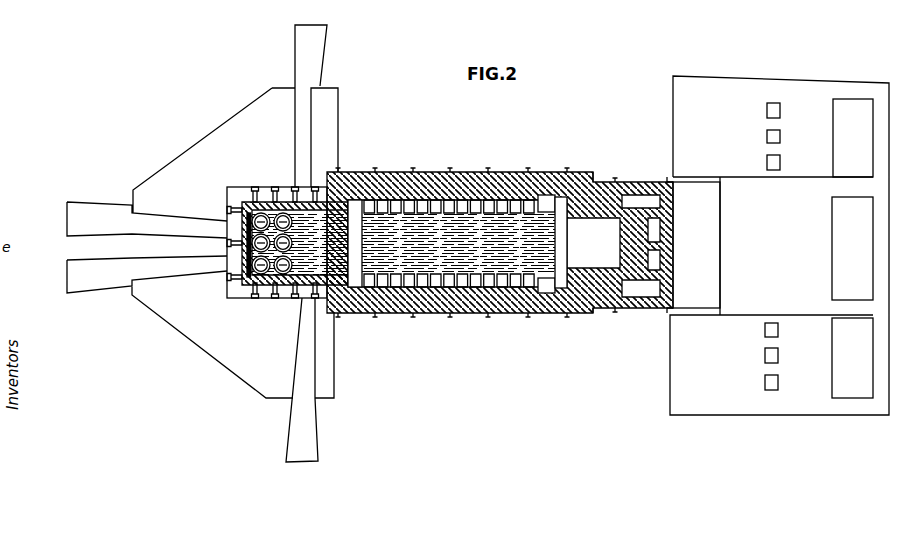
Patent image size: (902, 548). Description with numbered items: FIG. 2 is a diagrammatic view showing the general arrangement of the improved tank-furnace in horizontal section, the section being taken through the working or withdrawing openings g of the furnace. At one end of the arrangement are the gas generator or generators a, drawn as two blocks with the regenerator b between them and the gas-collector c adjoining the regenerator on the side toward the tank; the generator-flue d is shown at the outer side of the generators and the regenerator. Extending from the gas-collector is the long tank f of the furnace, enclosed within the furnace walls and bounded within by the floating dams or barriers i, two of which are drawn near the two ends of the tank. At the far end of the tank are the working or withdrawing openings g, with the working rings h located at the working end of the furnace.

The gas generator a is at (779, 245).
The regenerator b is at (753, 246).
The gas-collector c is at (693, 245).
The generator-flue d is at (852, 248).
The tank f is at (458, 244).
The working or withdrawing openings g is at (277, 255).
The working rings h is at (295, 243).
The floating dams or barriers i is at (457, 242).